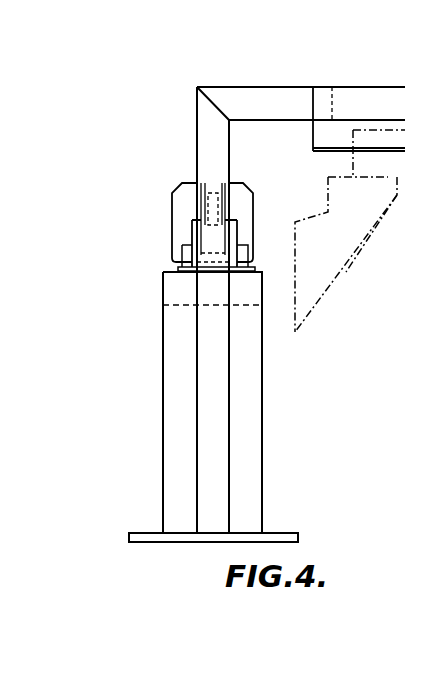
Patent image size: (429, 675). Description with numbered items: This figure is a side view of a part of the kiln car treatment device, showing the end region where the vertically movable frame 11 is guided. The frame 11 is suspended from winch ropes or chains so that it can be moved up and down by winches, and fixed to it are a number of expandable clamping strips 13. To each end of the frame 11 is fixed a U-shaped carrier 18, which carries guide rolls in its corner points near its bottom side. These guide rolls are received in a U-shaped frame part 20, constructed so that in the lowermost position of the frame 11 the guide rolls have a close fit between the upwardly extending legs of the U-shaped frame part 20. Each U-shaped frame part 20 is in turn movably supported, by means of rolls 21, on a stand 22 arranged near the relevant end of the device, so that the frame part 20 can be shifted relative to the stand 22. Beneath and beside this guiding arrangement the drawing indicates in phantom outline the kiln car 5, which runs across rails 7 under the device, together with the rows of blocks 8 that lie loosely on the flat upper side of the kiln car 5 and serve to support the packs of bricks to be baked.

The kiln car 5 is at (337, 290).
The rails 7 is at (391, 168).
The rows of blocks 8 is at (387, 242).
The frame 11 is at (388, 92).
The expandable clamping strips 13 is at (328, 128).
The U-shaped carriers 18 is at (203, 137).
The U-shaped frame part 20 is at (213, 189).
The rolls 21 is at (245, 267).
The stand 22 is at (172, 353).